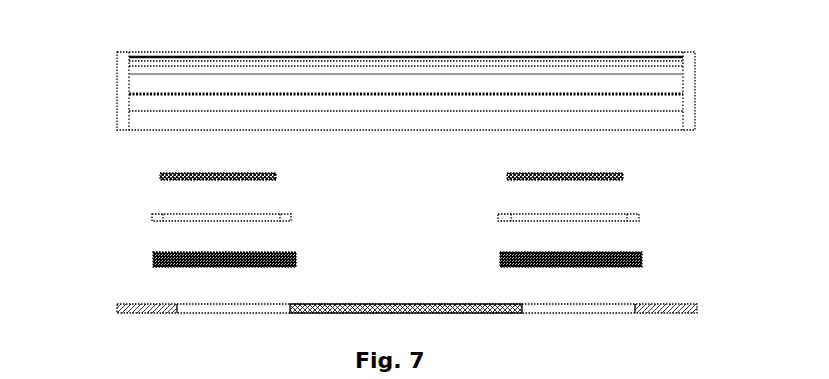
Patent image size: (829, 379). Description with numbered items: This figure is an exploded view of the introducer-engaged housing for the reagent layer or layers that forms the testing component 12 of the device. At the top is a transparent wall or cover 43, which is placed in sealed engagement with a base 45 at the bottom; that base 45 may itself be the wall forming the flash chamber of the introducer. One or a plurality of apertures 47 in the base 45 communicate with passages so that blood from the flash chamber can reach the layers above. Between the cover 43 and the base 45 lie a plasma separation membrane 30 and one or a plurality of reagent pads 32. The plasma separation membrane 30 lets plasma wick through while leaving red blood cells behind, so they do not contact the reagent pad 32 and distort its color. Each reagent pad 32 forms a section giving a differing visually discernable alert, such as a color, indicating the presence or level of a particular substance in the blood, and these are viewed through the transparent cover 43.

The testing component 12 is at (710, 82).
The transparent wall or cover 43 is at (127, 73).
The reagent pad 32 is at (180, 177).
The plasma separation membrane 30 is at (257, 259).
The base 45 is at (323, 305).
The aperture 47 is at (232, 313).